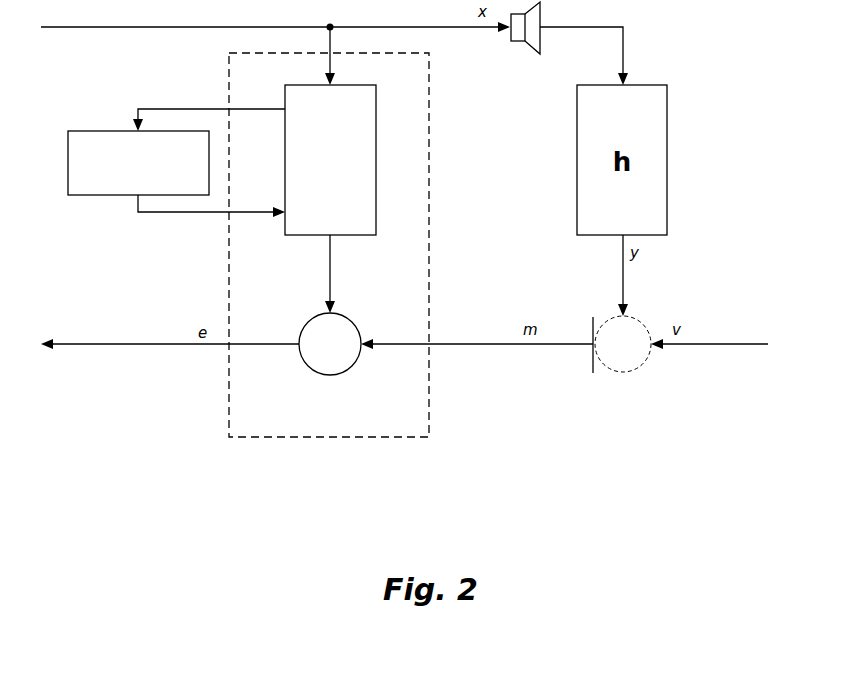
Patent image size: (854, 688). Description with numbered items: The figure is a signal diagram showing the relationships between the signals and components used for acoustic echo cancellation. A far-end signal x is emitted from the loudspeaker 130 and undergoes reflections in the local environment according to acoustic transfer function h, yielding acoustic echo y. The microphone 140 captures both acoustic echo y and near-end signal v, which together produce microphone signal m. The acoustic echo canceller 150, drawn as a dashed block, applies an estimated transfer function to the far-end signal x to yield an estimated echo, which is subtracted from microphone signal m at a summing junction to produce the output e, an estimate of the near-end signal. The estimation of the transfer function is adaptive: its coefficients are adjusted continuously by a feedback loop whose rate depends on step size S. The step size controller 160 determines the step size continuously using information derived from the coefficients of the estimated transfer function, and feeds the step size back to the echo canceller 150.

The loudspeaker 130 is at (529, 47).
The microphone 140 is at (620, 372).
The acoustic echo canceller 150 is at (429, 143).
The step size controller 160 is at (82, 131).